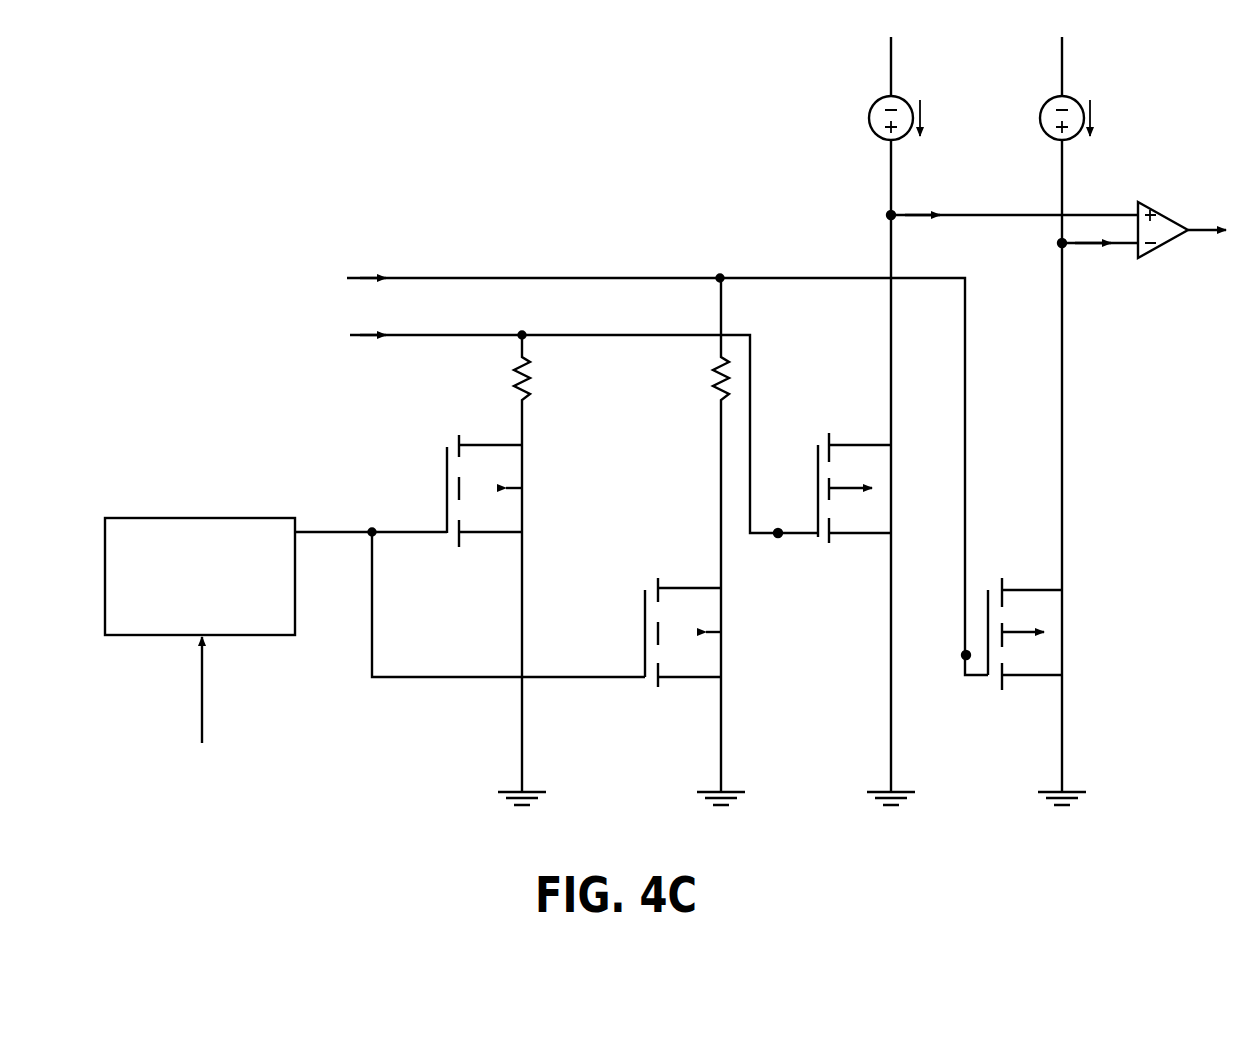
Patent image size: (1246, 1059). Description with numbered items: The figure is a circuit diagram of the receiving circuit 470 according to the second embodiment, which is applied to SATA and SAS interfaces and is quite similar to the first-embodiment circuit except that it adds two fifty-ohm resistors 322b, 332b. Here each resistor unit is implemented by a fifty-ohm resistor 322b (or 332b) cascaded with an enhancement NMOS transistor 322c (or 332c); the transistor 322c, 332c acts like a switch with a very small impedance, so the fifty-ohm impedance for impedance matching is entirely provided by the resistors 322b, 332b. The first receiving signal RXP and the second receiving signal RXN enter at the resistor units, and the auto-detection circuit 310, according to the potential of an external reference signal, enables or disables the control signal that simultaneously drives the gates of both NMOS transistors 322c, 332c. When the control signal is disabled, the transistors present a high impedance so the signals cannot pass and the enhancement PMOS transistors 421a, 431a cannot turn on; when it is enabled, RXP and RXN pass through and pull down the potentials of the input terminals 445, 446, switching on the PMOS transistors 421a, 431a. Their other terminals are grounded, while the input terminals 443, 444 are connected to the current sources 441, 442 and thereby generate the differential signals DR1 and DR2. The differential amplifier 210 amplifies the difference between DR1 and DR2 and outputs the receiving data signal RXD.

The receiving circuit 470 is at (368, 181).
The auto-detection circuit 310 is at (195, 533).
The 50-ohm resistor 322b is at (491, 390).
The enhancement NMOS transistor 322c is at (524, 508).
The 50-ohm resistor 332b is at (691, 433).
The enhancement NMOS transistor 332c is at (723, 657).
The enhancement PMOS transistor 421a is at (893, 505).
The enhancement PMOS transistor 431a is at (1064, 645).
The current source 441 is at (893, 241).
The current source 442 is at (1063, 313).
The input terminal 443 is at (990, 215).
The input terminal 444 is at (1077, 243).
The input terminal 445 is at (776, 516).
The input terminal 446 is at (946, 656).
The differential amplifier 210 is at (1160, 205).